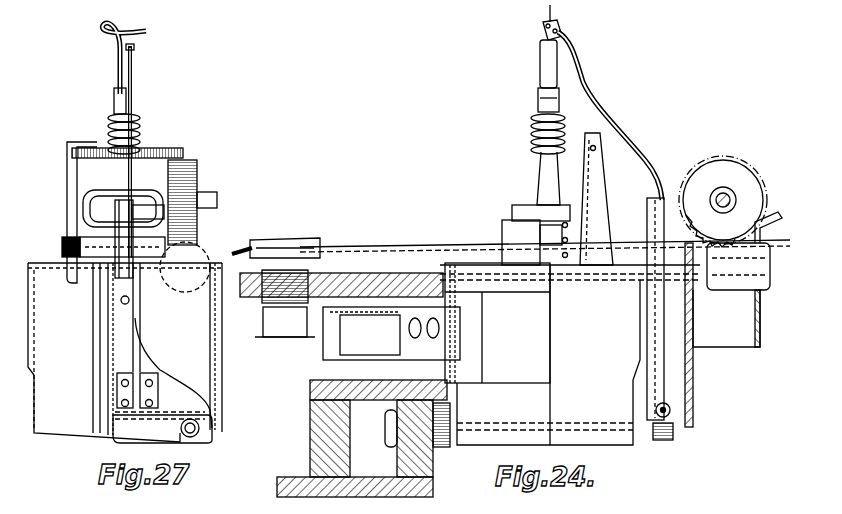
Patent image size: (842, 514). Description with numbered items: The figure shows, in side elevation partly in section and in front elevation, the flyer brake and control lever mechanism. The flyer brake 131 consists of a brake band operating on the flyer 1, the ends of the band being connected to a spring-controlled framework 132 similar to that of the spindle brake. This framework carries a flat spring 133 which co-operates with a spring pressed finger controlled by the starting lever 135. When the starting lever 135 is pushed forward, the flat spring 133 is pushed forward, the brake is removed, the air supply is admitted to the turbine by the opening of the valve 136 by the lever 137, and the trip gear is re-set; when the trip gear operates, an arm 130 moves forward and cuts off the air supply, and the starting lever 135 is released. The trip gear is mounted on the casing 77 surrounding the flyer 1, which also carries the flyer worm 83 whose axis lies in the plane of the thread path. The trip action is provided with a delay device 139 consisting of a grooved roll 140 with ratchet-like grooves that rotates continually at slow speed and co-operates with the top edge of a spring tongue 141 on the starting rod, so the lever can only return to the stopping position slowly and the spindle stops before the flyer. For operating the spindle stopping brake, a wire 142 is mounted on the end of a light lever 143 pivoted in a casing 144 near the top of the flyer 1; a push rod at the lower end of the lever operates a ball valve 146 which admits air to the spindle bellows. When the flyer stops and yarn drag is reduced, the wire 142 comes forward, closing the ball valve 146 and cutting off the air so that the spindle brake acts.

In FIG. 27, the flyer 1 is at (128, 50).
In FIG. 24, the flyer 1 is at (545, 70).
In FIG. 27, the casing 77 is at (60, 297).
In FIG. 27, the flyer worm 83 is at (140, 126).
In FIG. 24, the flyer worm 83 is at (531, 118).
In FIG. 24, the arm 130 is at (274, 240).
In FIG. 27, the flyer brake 131 is at (95, 212).
In FIG. 24, the flyer brake 131 is at (506, 228).
In FIG. 27, the spring-controlled framework 132 is at (80, 183).
In FIG. 24, the spring-controlled framework 132 is at (610, 166).
In FIG. 27, the flat spring 133 is at (68, 243).
In FIG. 27, the starting lever 135 is at (208, 256).
In FIG. 24, the starting lever 135 is at (395, 248).
In FIG. 24, the valve 136 is at (330, 384).
In FIG. 24, the lever 137 is at (350, 340).
In FIG. 27, the delay device 139 is at (197, 172).
In FIG. 24, the delay device 139 is at (745, 190).
In FIG. 27, the grooved roll 140 is at (199, 195).
In FIG. 24, the grooved roll 140 is at (722, 158).
In FIG. 24, the spring tongue 141 is at (663, 258).
In FIG. 27, the wire 142 is at (132, 82).
In FIG. 24, the wire 142 is at (589, 100).
In FIG. 27, the light lever 143 is at (199, 225).
In FIG. 24, the light lever 143 is at (654, 196).
In FIG. 27, the casing 144 is at (216, 352).
In FIG. 24, the casing 144 is at (694, 397).
In FIG. 24, the ball valve 146 is at (388, 420).